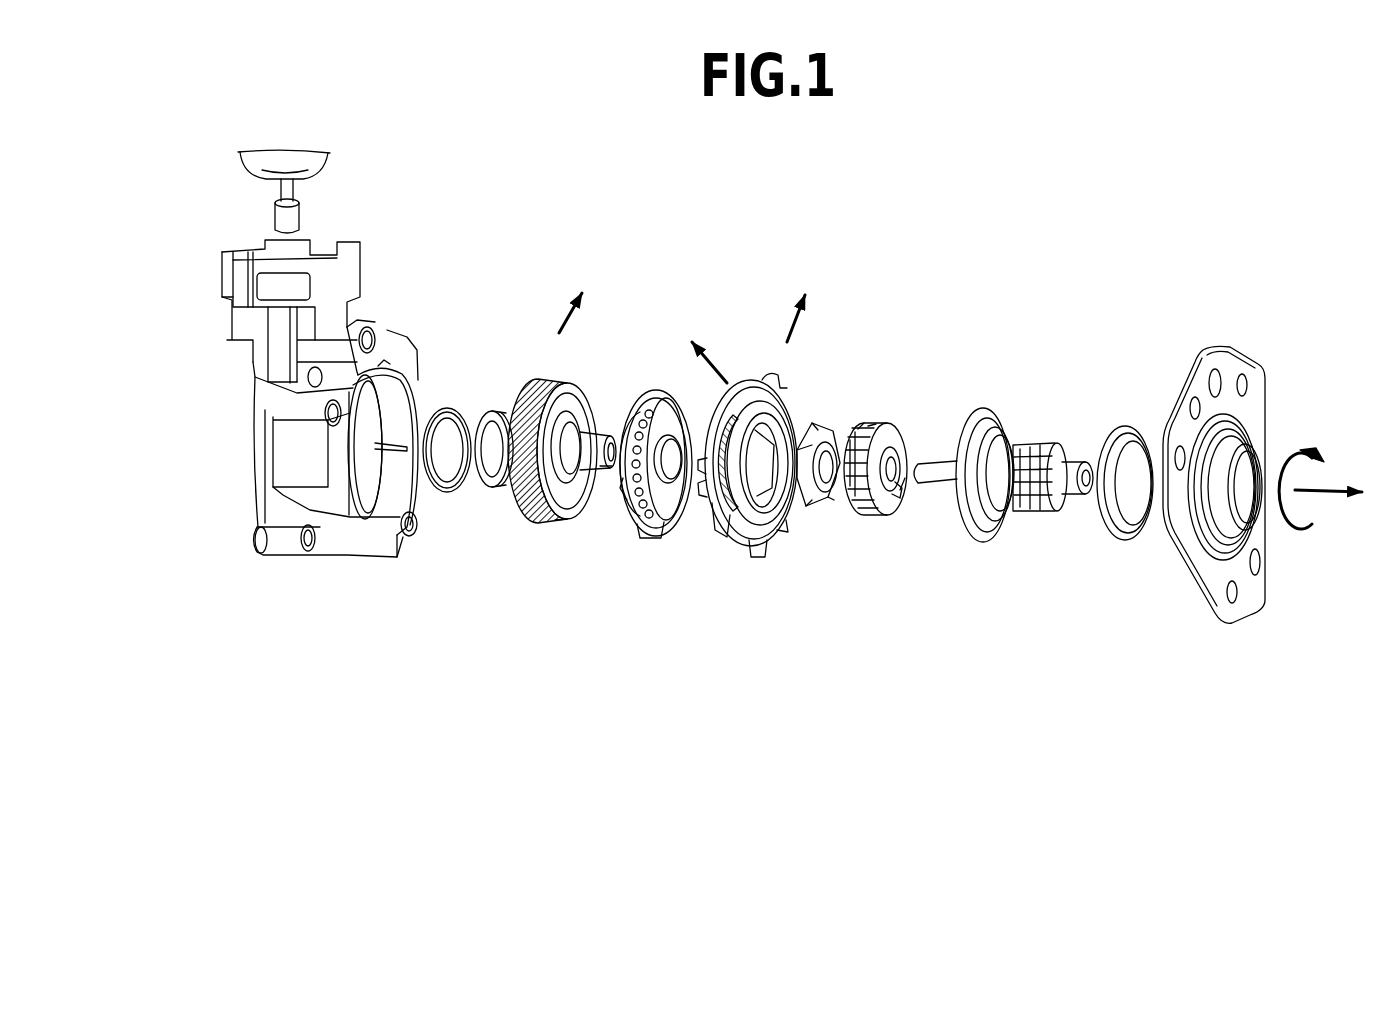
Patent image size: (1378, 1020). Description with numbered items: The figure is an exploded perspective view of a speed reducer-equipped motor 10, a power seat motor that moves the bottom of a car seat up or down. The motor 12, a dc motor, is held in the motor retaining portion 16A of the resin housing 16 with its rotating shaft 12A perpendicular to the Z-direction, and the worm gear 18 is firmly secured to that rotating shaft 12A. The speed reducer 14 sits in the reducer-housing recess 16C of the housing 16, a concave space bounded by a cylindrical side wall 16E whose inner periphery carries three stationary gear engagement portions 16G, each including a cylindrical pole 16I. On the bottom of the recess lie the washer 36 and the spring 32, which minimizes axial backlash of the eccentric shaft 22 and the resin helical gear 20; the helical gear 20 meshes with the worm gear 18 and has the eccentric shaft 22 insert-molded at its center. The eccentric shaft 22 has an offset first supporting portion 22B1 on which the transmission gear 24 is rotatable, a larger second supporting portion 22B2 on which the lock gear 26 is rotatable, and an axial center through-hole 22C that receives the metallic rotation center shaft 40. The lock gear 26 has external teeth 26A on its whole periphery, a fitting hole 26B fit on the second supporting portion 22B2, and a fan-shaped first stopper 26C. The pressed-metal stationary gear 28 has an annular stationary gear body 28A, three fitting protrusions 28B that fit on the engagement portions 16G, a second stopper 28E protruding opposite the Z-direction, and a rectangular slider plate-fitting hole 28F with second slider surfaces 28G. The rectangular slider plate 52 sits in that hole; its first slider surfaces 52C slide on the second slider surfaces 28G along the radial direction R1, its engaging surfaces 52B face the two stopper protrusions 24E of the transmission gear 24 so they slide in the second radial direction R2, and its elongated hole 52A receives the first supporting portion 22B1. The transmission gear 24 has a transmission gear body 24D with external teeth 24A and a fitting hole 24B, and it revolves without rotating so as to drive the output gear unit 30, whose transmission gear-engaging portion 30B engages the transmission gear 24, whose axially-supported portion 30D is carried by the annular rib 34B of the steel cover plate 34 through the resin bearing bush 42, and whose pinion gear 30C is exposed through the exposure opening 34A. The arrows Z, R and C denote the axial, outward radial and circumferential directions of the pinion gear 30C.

The speed reducer-equipped motor 10 is at (938, 172).
The speed reducer 14 is at (957, 248).
The motor 12 is at (298, 175).
The rotating shaft 12A is at (286, 190).
The worm gear 18 is at (300, 214).
The housing 16 is at (327, 437).
The motor retaining portion 16A is at (223, 316).
The reducer-housing recess 16C is at (397, 535).
The side wall 16E is at (398, 471).
The stationary gear engagement portions 16G is at (421, 372).
The cylindrical pole 16I is at (417, 358).
The washer 36 is at (448, 405).
The spring 32 is at (490, 408).
The helical gear 20 is at (582, 453).
The eccentric shaft 22 is at (607, 474).
The first supporting portion 22B1 is at (603, 432).
The second supporting portion 22B2 is at (552, 524).
The axial center through-hole 22C is at (618, 490).
The lock gear 26 is at (670, 448).
The external teeth 26A is at (665, 393).
The fitting hole 26B is at (678, 502).
The first stopper 26C is at (654, 534).
The stationary gear 28 is at (784, 476).
The stationary gear body 28A is at (773, 495).
The fitting protrusions 28B is at (757, 560).
The second stopper 28E is at (720, 528).
The slider plate-fitting hole 28F is at (781, 493).
The second slider surfaces 28G is at (762, 380).
The slider plate 52 is at (856, 459).
The elongated hole 52A is at (827, 440).
The engaging surfaces 52B is at (810, 420).
The first slider surfaces 52C is at (822, 503).
The transmission gear 24 is at (913, 449).
The external teeth 24A is at (870, 425).
The fitting hole 24B is at (895, 484).
The transmission gear body 24D is at (878, 500).
The stopper protrusions 24E is at (856, 428).
The rotation center shaft 40 is at (940, 460).
The output gear unit 30 is at (1034, 433).
The transmission gear-engaging portion 30B is at (988, 410).
The pinion gear 30C is at (1052, 456).
The axially-supported portion 30D is at (1020, 444).
The bearing bush 42 is at (1140, 430).
The cover plate 34 is at (1257, 514).
The exposure opening 34A is at (1250, 467).
The annular rib 34B is at (1268, 477).
The R-direction R is at (561, 325).
The radial direction R1 is at (727, 372).
The second radial direction R2 is at (812, 305).
The C-direction C is at (1296, 445).
The Z-direction Z is at (1333, 492).